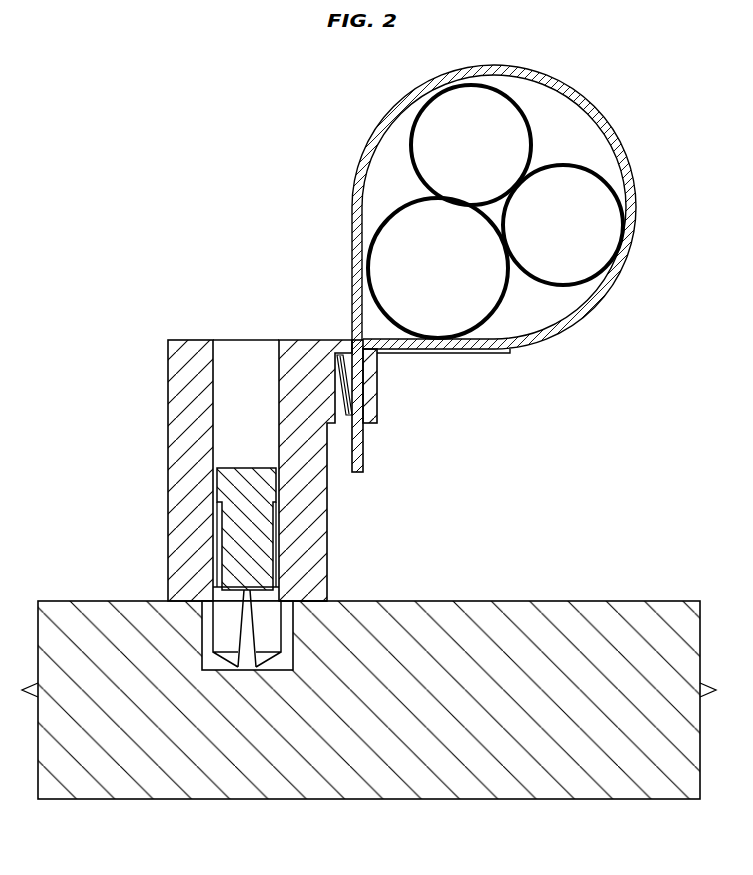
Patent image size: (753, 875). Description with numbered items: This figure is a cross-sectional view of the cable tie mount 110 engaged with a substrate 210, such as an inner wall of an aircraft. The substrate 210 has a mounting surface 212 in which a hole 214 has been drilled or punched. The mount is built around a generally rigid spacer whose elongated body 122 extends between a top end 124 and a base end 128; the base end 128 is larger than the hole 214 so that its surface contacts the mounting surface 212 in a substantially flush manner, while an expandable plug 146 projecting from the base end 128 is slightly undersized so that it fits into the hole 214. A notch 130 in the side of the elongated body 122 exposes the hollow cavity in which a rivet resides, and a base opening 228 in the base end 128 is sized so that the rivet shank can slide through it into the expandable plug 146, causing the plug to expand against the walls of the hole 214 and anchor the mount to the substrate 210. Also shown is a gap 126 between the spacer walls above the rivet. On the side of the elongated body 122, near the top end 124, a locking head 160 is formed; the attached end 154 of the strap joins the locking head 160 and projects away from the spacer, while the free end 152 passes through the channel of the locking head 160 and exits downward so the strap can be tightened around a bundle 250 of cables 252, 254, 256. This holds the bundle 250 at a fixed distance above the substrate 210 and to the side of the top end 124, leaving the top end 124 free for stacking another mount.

The cable tie mount 110 is at (360, 333).
The elongated body 122 is at (356, 470).
The top end 124 is at (194, 340).
The fastener gap 126 is at (265, 340).
The base end 128 is at (327, 602).
The notch 130 is at (242, 519).
The expandable plug 146 is at (272, 630).
The free end 152 is at (363, 454).
The attached end 154 is at (377, 353).
The locking head 160 is at (377, 397).
The substrate 210 is at (369, 701).
The mounting surface 212 is at (104, 601).
The hole 214 is at (202, 633).
The base opening 228 is at (282, 594).
The bundle 250 is at (477, 225).
The cable 252 is at (438, 268).
The cable 254 is at (471, 145).
The cable 256 is at (563, 225).